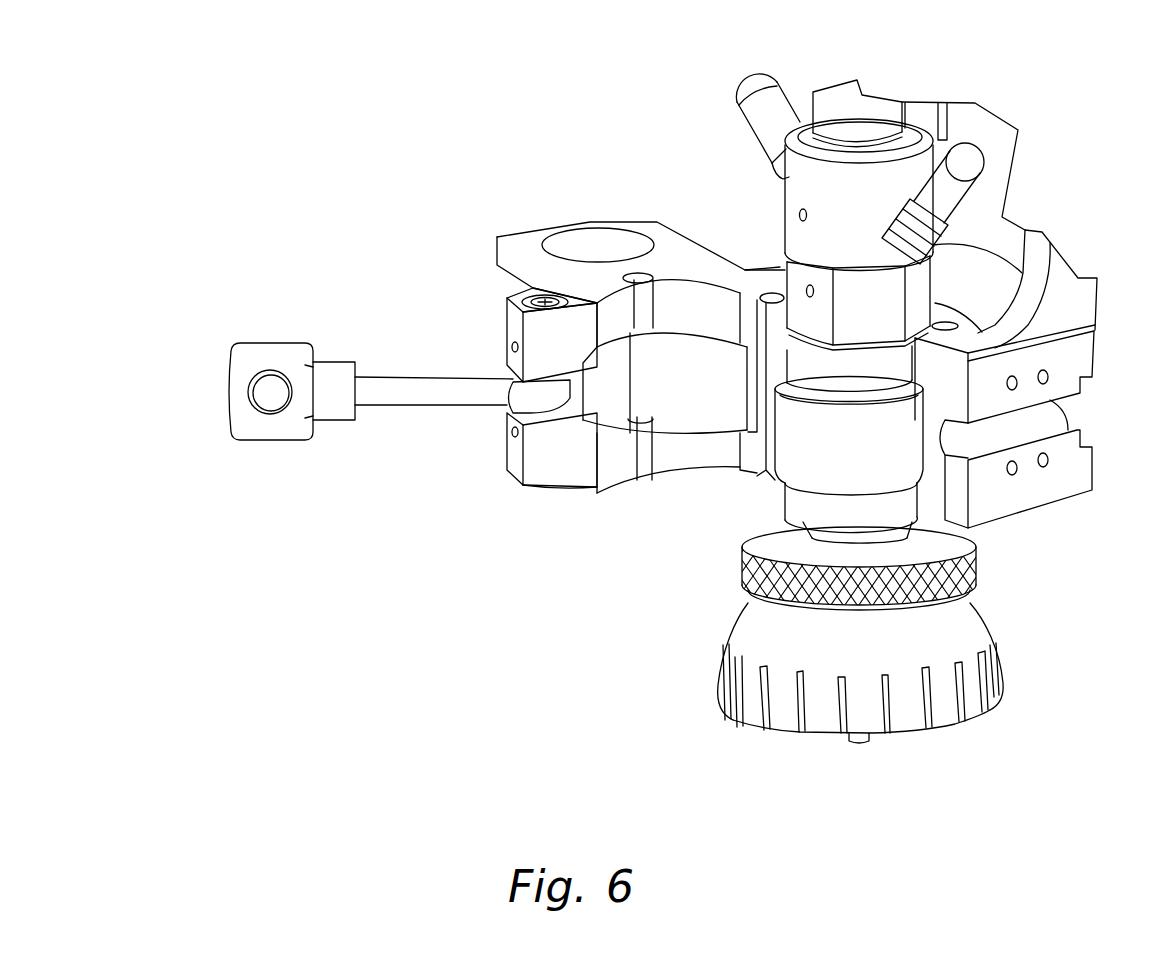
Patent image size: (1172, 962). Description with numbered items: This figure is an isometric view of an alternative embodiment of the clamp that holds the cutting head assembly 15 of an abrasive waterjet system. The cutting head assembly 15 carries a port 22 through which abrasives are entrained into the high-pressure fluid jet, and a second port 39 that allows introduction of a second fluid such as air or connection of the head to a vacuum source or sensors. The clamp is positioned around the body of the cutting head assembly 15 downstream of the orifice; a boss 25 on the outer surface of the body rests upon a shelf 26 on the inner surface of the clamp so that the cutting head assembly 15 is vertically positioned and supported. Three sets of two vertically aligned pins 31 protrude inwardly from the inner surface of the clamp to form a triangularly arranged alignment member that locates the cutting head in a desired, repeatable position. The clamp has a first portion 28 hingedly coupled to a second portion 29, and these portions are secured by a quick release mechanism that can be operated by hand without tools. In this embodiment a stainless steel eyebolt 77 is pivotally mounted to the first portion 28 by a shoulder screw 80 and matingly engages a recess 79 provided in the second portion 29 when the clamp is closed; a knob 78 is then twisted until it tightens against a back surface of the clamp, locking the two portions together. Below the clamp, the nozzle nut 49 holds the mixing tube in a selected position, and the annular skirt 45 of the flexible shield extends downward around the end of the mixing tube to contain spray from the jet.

The cutting head assembly 15 is at (778, 227).
The port 22 is at (752, 82).
The second port 39 is at (968, 161).
The boss 25 is at (883, 465).
The nozzle nut 49 is at (972, 570).
The annular skirt 45 is at (747, 638).
The shelf 26 is at (680, 413).
The pins 31 is at (642, 290).
The first portion 28 is at (508, 330).
The shoulder screw 80 is at (545, 400).
The eyebolt 77 is at (433, 392).
The knob 78 is at (260, 353).
The second portion 29 is at (1077, 360).
The recess 79 is at (1027, 428).